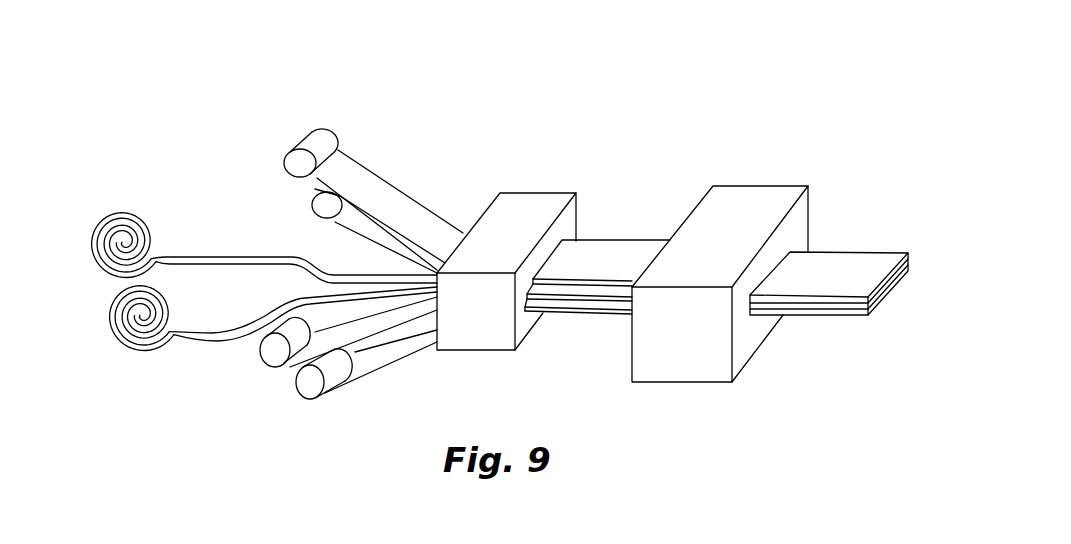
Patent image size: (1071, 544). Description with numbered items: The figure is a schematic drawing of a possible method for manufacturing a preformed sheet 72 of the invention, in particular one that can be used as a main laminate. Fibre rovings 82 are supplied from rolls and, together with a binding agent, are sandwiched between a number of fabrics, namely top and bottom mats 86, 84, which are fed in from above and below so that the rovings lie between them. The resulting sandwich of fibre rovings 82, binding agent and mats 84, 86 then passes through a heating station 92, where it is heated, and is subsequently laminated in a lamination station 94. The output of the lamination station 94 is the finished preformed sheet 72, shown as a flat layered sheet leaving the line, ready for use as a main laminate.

The fibre rovings 82 is at (118, 218).
The top mat 86 is at (310, 140).
The bottom mat 84 is at (312, 382).
The heating station 92 is at (528, 202).
The lamination station 94 is at (750, 200).
The preformed sheet 72 is at (858, 270).